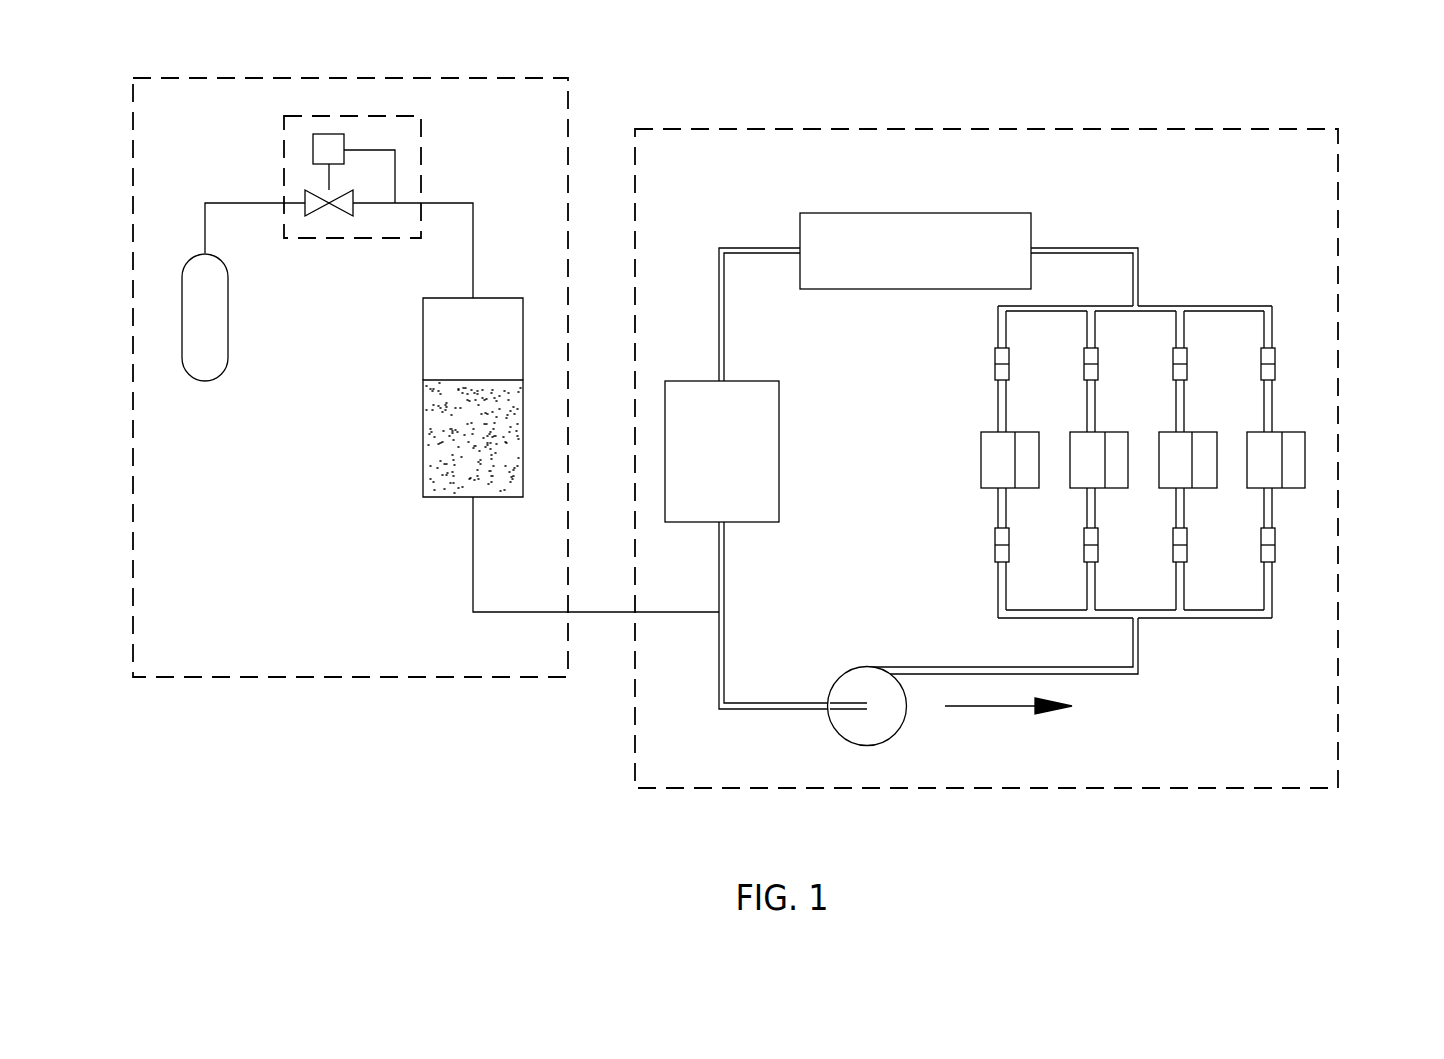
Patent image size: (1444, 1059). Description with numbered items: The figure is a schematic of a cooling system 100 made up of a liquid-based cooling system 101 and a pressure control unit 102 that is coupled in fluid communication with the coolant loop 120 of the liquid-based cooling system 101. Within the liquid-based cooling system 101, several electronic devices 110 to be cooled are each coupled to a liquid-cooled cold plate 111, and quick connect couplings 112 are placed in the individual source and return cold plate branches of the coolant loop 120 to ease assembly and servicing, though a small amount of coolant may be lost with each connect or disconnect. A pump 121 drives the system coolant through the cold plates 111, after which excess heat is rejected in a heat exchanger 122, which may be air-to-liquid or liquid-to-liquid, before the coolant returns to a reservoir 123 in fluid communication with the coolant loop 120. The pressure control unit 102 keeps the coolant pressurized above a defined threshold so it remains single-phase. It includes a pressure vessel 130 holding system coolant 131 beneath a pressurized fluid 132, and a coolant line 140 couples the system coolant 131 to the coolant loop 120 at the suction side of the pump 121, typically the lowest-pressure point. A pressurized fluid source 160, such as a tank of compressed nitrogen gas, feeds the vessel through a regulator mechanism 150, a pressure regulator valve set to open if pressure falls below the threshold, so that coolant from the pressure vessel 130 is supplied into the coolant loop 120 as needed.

The cooling system 100 is at (895, 68).
The liquid-based cooling system 101 is at (1146, 120).
The pressure control unit 102 is at (548, 70).
The electronic device 110 is at (1305, 451).
The cold plate 111 is at (1263, 432).
The quick connect coupling 112 is at (1173, 362).
The coolant loop 120 is at (724, 648).
The pump 121 is at (866, 745).
The heat exchanger 122 is at (930, 257).
The reservoir 123 is at (698, 461).
The pressure vessel 130 is at (406, 399).
The system coolant 131 is at (435, 465).
The pressurized fluid 132 is at (442, 335).
The coolant line 140 is at (598, 613).
The regulator mechanism 150 is at (421, 150).
The pressurized fluid source 160 is at (205, 383).